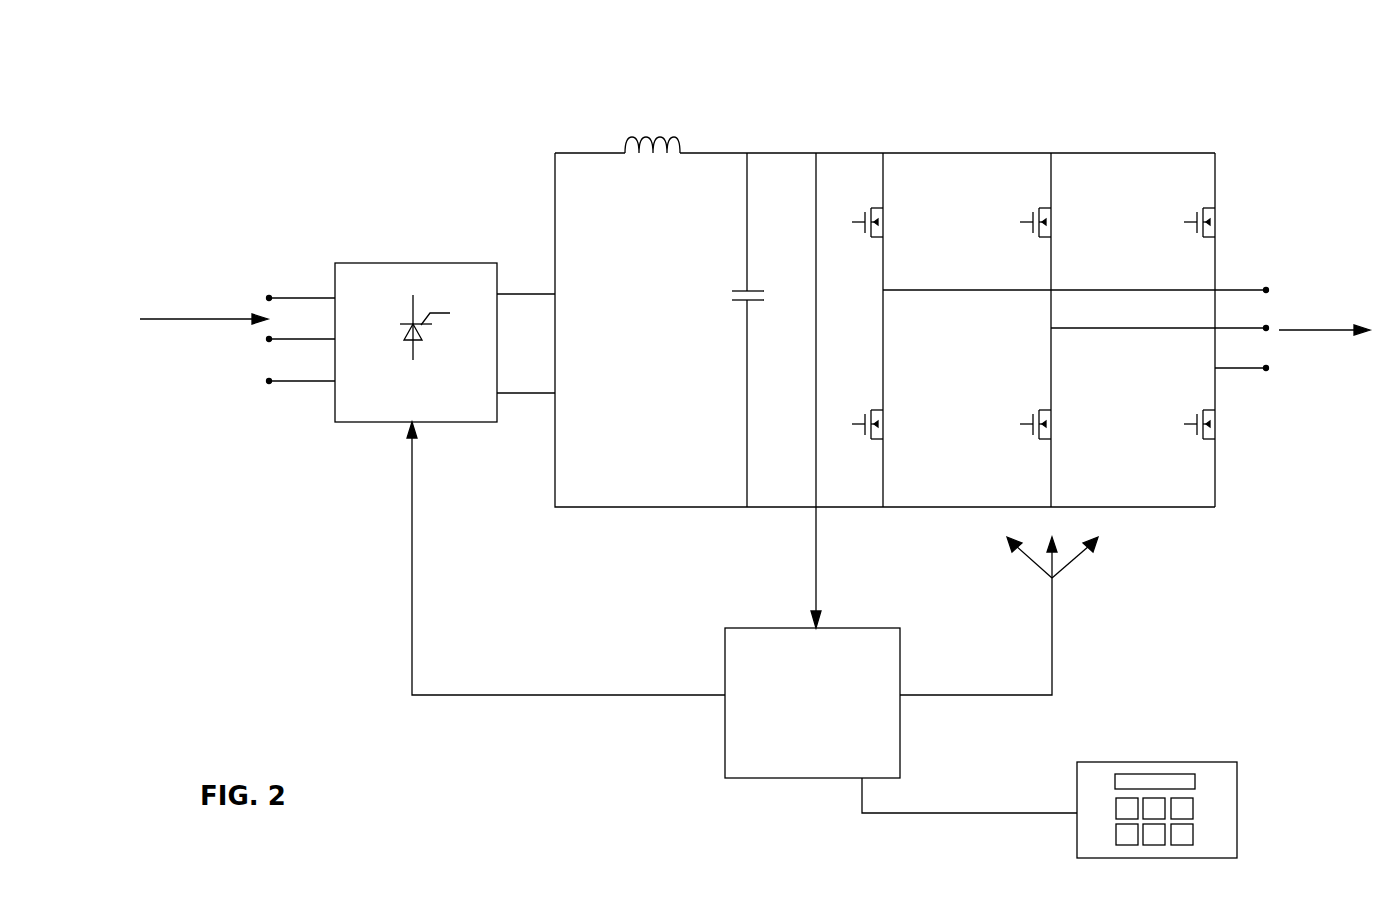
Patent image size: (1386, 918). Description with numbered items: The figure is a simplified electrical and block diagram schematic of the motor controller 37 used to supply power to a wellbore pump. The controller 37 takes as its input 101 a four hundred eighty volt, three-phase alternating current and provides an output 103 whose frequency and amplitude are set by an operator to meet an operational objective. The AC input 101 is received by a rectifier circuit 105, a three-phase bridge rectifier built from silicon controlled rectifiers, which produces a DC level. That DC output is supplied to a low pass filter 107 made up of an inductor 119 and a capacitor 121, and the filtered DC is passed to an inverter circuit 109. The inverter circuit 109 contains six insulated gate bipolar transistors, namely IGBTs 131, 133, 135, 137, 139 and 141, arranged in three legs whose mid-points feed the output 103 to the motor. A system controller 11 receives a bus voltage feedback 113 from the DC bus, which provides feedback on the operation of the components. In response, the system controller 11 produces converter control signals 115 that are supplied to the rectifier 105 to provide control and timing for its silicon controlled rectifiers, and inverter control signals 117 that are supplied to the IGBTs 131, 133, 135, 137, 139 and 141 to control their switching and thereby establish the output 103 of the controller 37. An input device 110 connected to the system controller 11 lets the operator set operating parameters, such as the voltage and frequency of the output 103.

The controller 37 is at (1256, 119).
The input 101 is at (211, 222).
The output 103 is at (1310, 268).
The rectifier circuit 105 is at (388, 255).
The low pass filter 107 is at (555, 118).
The inverter circuit 109 is at (887, 118).
The input device 110 is at (1237, 795).
The system controller 11 is at (812, 760).
The bus voltage feedback 113 is at (817, 550).
The converter control signals 115 is at (412, 608).
The inverter control signals 117 is at (1052, 618).
The inductor 119 is at (647, 197).
The capacitor 121 is at (733, 293).
The IGBT 131 is at (887, 215).
The IGBT 133 is at (887, 417).
The IGBT 135 is at (1055, 215).
The IGBT 137 is at (1055, 417).
The IGBT 139 is at (1219, 215).
The IGBT 141 is at (1219, 417).